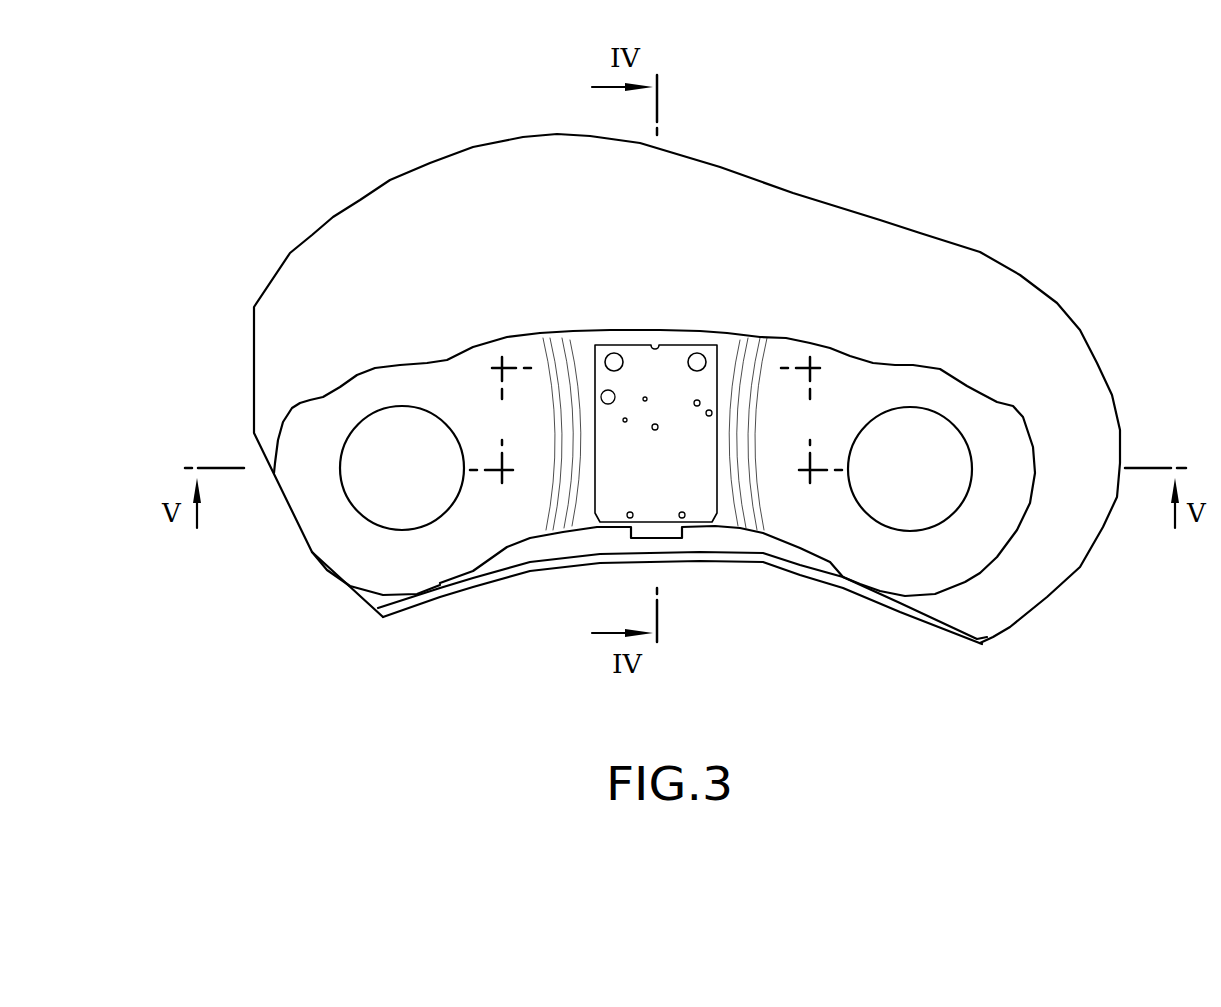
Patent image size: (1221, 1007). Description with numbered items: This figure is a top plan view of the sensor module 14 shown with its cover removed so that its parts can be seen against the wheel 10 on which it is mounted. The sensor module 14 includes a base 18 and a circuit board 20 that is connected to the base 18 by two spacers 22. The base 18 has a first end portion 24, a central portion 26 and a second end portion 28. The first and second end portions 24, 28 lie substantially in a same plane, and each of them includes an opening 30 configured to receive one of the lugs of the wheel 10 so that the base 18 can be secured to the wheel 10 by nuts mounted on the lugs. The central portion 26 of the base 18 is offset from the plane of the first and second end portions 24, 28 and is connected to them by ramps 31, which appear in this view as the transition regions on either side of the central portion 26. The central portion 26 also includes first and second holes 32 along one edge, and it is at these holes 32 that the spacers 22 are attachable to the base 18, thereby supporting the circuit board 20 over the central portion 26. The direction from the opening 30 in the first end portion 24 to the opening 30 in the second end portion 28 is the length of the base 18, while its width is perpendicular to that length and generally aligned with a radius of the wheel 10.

The wheel 10 is at (687, 388).
The sensor module 14 is at (641, 589).
The base 18 is at (682, 590).
The circuit board 20 is at (660, 494).
The spacers 22 is at (647, 298).
The first end portion 24 is at (407, 451).
The central portion 26 is at (653, 400).
The second end portion 28 is at (897, 447).
The opening 30 is at (656, 538).
The ramps 31 is at (523, 402).
The first and second holes 32 is at (707, 323).